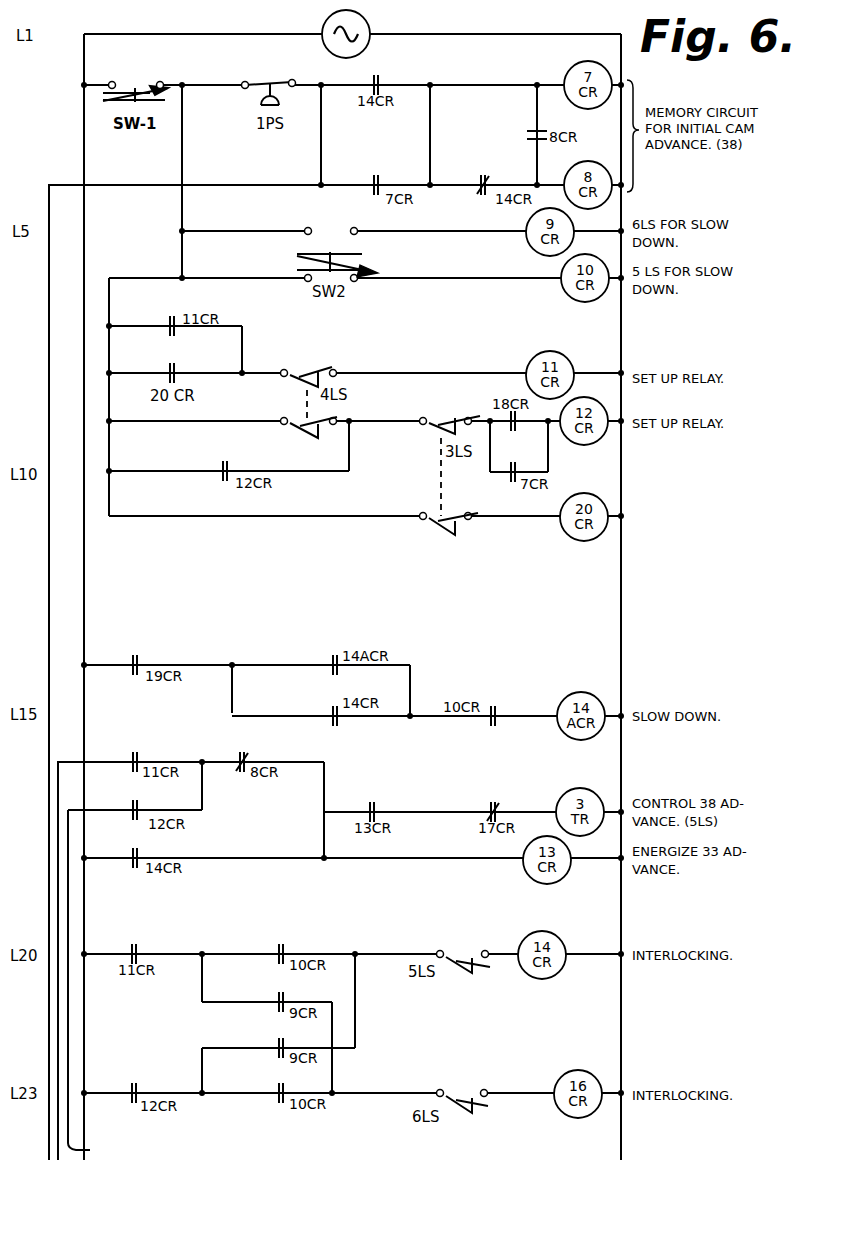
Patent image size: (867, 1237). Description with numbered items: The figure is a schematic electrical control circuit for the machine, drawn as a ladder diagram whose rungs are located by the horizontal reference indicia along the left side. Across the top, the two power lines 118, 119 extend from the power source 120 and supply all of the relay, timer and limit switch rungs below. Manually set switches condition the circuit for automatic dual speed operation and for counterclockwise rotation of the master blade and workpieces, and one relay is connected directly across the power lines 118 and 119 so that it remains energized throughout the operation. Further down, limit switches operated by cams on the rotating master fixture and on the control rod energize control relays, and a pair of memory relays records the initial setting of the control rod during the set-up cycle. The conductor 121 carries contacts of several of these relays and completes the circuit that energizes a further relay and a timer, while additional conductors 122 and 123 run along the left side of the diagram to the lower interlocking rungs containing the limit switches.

The power line 118 is at (120, 23).
The power line 119 is at (505, 34).
The power source 120 is at (322, 22).
The conductor 121 is at (58, 788).
The conductor 122 is at (49, 1007).
The conductor 123 is at (76, 1150).